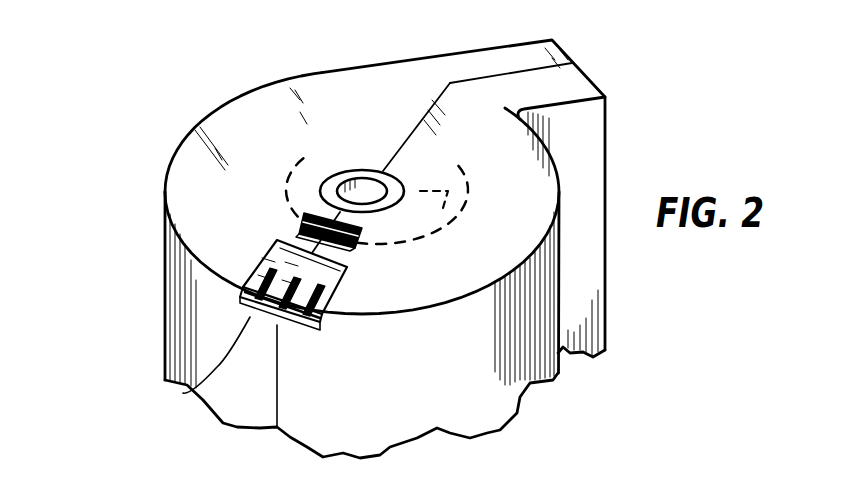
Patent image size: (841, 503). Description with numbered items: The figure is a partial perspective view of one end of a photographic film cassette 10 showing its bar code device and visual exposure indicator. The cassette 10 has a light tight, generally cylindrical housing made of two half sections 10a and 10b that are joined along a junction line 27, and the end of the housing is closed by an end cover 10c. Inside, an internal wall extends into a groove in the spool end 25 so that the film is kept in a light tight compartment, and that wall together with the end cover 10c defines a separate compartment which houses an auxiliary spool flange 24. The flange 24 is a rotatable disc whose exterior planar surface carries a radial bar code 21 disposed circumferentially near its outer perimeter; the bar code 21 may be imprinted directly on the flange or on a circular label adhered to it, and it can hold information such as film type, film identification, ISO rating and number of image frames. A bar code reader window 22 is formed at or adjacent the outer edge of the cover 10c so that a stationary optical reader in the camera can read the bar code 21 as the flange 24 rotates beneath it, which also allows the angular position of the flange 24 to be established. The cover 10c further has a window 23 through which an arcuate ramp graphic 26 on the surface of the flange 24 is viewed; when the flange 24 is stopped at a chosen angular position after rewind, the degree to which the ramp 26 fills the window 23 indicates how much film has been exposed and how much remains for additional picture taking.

The cassette 10 is at (169, 168).
The housing half section 10a is at (163, 281).
The housing half section 10b is at (560, 263).
The end cover 10c is at (221, 107).
The radial bar code 21 is at (303, 330).
The bar code reader window 22 is at (183, 393).
The window 23 is at (352, 244).
The auxiliary spool flange 24 is at (300, 220).
The spool end 25 is at (362, 188).
The arcuate ramp graphic 26 is at (472, 154).
The junction line 27 is at (413, 135).